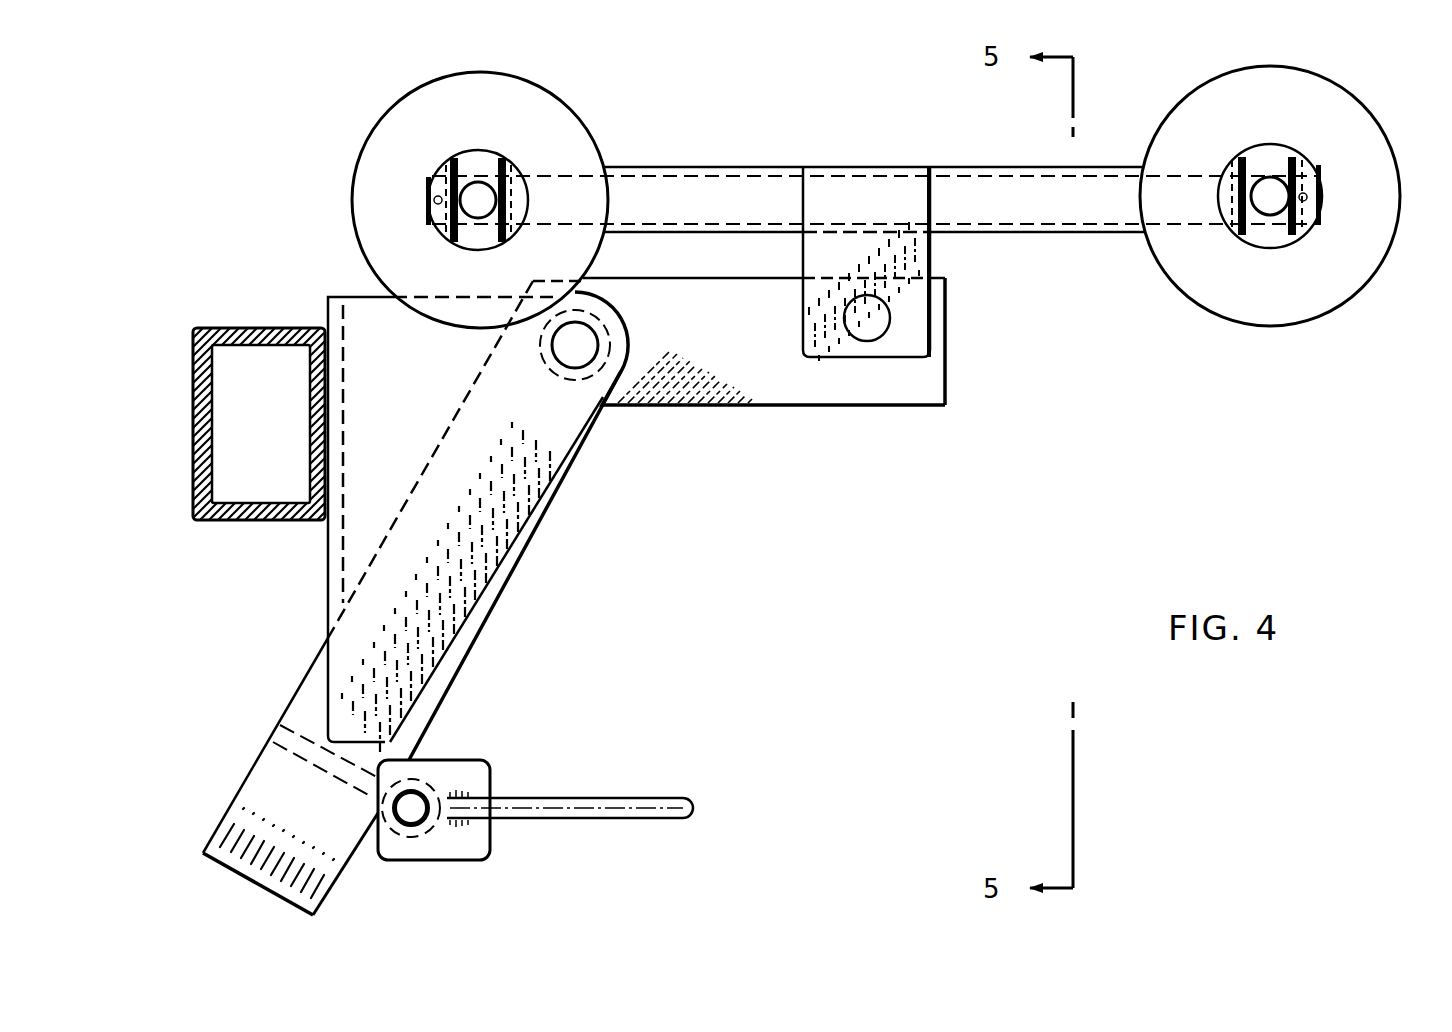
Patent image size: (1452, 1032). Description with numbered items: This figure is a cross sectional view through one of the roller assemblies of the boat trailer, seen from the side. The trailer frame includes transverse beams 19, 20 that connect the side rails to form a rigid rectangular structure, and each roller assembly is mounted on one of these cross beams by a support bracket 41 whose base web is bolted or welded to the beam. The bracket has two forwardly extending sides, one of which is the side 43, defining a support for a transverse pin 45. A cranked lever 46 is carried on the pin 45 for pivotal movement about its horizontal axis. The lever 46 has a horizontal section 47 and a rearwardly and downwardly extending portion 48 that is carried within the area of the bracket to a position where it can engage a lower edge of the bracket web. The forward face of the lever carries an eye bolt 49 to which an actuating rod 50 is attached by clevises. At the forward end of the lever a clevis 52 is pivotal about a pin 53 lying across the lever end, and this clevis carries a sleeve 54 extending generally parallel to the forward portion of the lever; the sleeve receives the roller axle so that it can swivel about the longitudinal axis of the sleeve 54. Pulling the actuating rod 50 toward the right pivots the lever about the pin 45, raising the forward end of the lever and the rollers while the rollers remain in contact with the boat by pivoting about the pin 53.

The transverse beam 20 is at (223, 400).
The transverse beam 19 is at (240, 324).
The support bracket 41 is at (362, 320).
The forwardly extending side 43 is at (574, 596).
The transverse pin 45 is at (566, 352).
The cranked lever 46 is at (660, 410).
The horizontal section 47 is at (677, 519).
The rearwardly and downwardly extending portion 48 is at (454, 684).
The eye bolt 49 is at (428, 836).
The actuating rod 50 is at (607, 796).
The clevis 52 is at (942, 253).
The pin 53 is at (881, 318).
The sleeve 54 is at (697, 167).